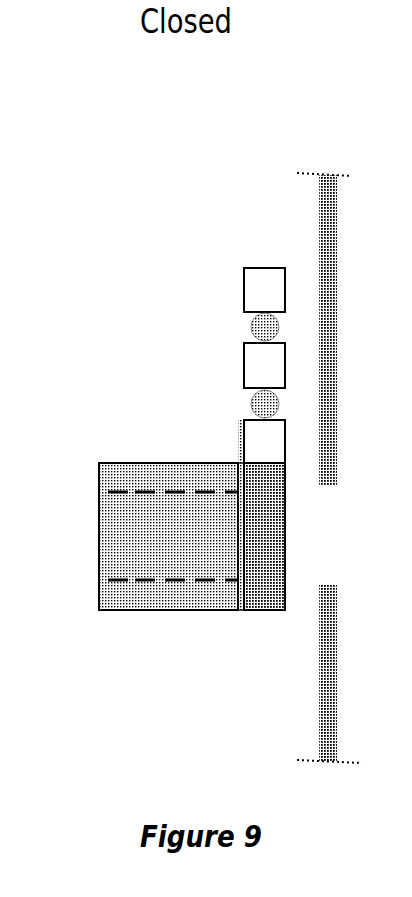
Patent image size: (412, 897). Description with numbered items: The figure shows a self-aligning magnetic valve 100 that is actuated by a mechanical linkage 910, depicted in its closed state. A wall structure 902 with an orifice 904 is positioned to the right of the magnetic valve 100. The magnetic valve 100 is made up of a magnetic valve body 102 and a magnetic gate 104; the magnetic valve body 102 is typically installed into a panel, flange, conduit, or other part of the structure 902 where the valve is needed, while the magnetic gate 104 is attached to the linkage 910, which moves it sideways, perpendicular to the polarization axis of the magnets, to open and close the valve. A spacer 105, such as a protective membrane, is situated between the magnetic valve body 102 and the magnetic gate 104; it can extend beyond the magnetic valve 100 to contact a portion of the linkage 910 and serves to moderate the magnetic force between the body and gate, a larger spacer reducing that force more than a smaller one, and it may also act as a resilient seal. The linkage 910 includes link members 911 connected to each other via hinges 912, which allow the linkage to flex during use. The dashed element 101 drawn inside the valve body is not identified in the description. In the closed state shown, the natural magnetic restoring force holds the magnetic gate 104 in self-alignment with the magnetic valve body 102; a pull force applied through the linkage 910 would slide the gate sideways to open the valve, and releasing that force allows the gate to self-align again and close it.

The magnetic valve 100 is at (186, 622).
The internal layers 101 is at (100, 535).
The magnetic valve body 102 is at (150, 613).
The magnetic gate 104 is at (266, 613).
The spacer 105 is at (238, 450).
The wall structure 902 is at (338, 666).
The orifice 904 is at (343, 538).
The mechanical linkage 910 is at (242, 286).
The link members 911 is at (263, 265).
The hinges 912 is at (247, 399).